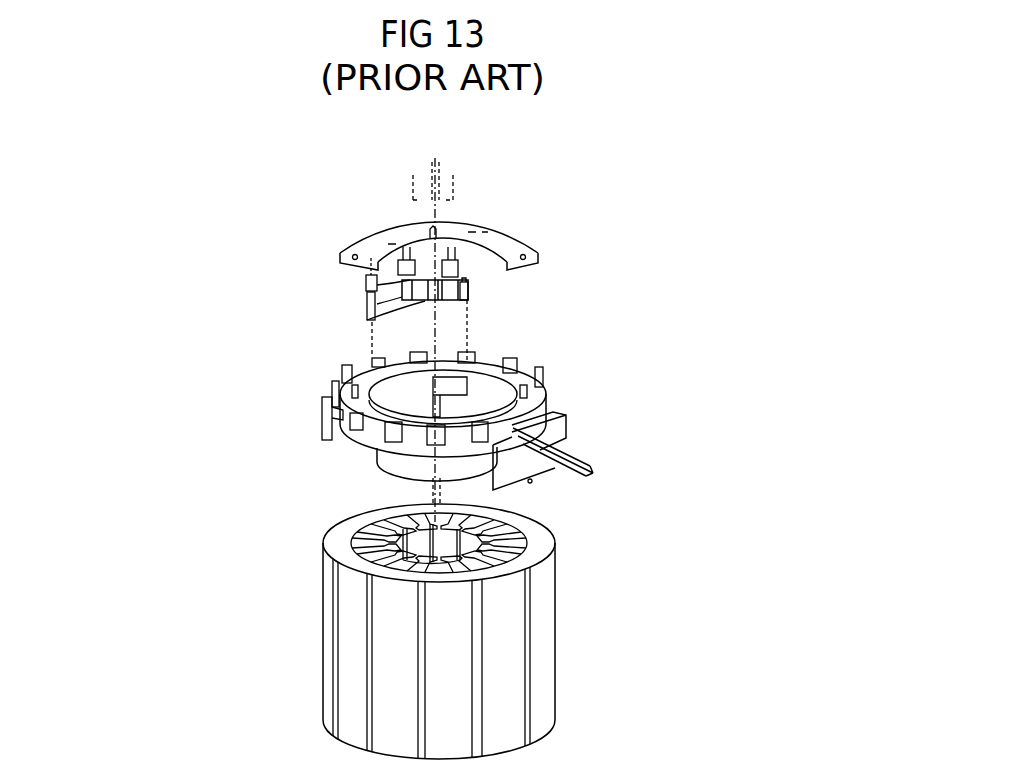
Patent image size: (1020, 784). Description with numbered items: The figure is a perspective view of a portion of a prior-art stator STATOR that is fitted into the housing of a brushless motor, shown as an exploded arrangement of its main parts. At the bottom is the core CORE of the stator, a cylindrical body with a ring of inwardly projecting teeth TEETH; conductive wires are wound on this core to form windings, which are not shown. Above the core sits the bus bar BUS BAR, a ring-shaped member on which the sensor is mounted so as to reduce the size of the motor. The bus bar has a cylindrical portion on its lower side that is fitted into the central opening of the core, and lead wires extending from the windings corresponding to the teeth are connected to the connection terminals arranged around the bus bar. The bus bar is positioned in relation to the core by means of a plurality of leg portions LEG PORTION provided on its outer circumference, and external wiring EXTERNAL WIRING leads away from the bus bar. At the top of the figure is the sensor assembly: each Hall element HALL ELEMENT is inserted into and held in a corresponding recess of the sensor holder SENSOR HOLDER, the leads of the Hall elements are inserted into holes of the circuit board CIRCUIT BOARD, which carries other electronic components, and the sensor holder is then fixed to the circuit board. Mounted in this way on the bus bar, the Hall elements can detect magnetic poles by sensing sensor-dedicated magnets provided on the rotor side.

The circuit board CIRCUIT BOARD is at (530, 236).
The Hall element HALL ELEMENT is at (367, 283).
The sensor holder SENSOR HOLDER is at (367, 310).
The bus bar BUS BAR is at (443, 429).
The leg portion LEG PORTION is at (560, 427).
The external wiring EXTERNAL WIRING is at (592, 460).
The stator STATOR is at (477, 627).
The teeth TEETH is at (352, 560).
The core CORE is at (542, 630).